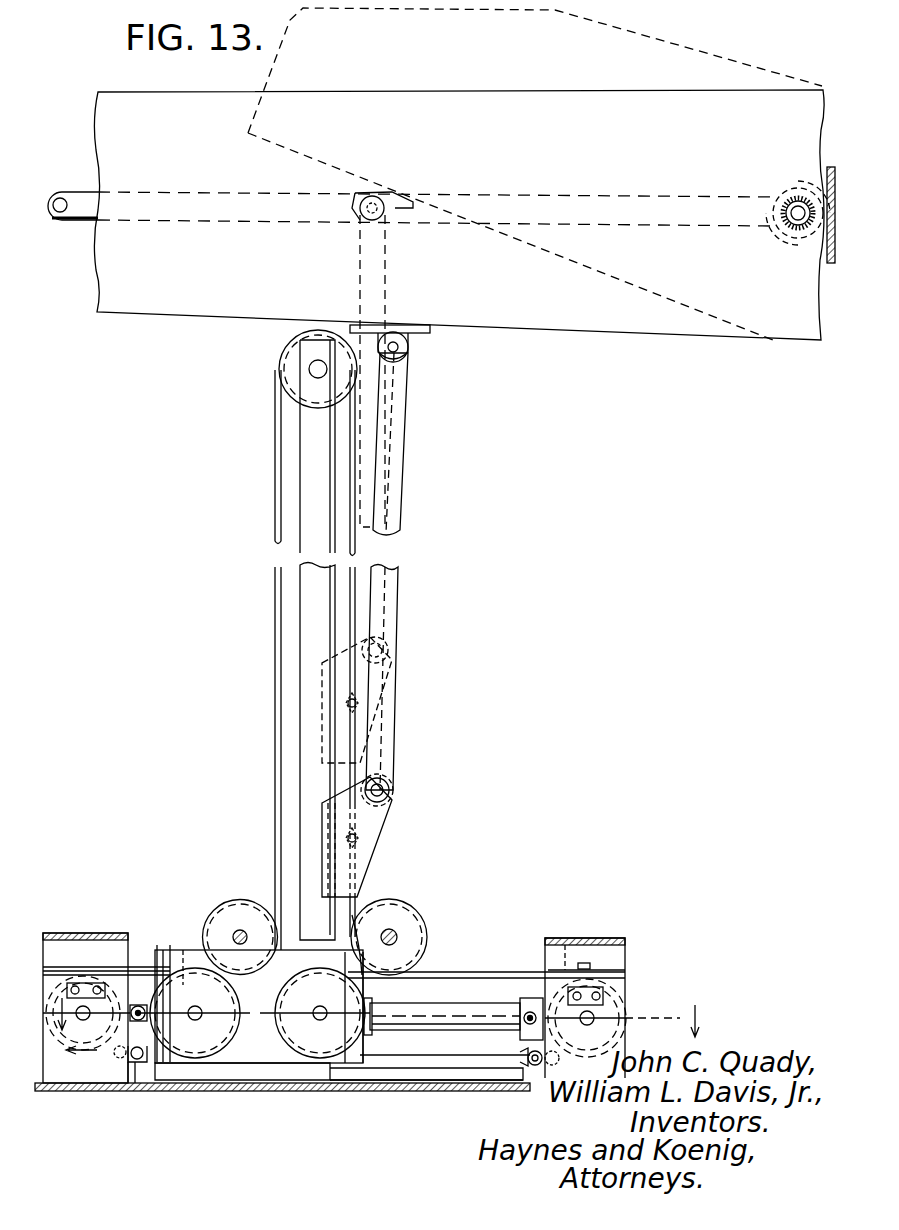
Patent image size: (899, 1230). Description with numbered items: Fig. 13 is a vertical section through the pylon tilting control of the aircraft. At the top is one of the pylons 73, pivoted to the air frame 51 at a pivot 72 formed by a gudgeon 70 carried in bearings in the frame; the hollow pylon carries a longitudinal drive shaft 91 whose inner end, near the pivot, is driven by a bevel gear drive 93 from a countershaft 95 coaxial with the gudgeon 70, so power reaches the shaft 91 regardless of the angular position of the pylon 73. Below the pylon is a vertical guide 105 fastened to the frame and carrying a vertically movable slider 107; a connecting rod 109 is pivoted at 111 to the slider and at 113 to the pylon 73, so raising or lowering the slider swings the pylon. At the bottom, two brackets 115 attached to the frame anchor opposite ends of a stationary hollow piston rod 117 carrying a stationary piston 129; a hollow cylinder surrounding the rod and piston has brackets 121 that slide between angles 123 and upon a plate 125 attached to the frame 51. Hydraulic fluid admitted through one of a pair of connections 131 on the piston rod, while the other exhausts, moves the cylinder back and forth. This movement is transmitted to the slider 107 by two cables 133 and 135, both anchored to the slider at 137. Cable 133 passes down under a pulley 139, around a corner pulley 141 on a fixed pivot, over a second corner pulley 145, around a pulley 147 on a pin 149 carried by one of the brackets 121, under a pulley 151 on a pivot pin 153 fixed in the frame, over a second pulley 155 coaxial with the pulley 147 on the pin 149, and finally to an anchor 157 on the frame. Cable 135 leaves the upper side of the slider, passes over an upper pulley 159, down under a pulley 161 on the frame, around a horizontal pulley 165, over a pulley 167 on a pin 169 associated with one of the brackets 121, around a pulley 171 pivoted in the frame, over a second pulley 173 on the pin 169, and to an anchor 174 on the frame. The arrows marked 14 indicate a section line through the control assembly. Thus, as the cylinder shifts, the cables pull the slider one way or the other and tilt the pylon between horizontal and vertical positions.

The drive shaft 91 is at (84, 190).
The bevel gear drive 93 is at (806, 182).
The countershaft 95 is at (786, 204).
The gudgeon 70 is at (775, 228).
The pivot 72 is at (793, 220).
The pylon 73 is at (540, 250).
The pivot 113 is at (388, 218).
The connecting rod 109 is at (358, 280).
The upper pulley 159 is at (290, 366).
The vertical guide 105 is at (311, 617).
The cable 135 is at (276, 402).
The pivot 111 is at (390, 633).
The slider 107 is at (394, 682).
The anchor 137 is at (357, 705).
The pulley 161 is at (230, 910).
The pulley 139 is at (406, 910).
The cable 133 is at (362, 905).
The bracket 115 is at (55, 932).
The horizontal pulley 165 is at (107, 963).
The pulley 171 is at (72, 983).
The pulley 167 is at (158, 955).
The second pulley 173 is at (183, 950).
The section line 14 is at (381, 1029).
The bracket 121 is at (250, 1060).
The pin 169 is at (200, 1018).
The pin 149 is at (318, 1020).
The inlet 131 is at (146, 1018).
The stationary piston 129 is at (368, 985).
The hollow piston rod 117 is at (445, 1030).
The pulley 147 is at (366, 1035).
The second pulley 155 is at (400, 1026).
The anchor 157 is at (532, 1052).
The second corner pulley 145 is at (567, 938).
The corner pulley 141 is at (612, 968).
The pulley 151 is at (618, 1005).
The pivot pin 153 is at (590, 1022).
The anchor 174 is at (131, 1085).
The plate 125 is at (190, 1088).
The air frame 51 is at (420, 1092).
The angle 123 is at (450, 1080).